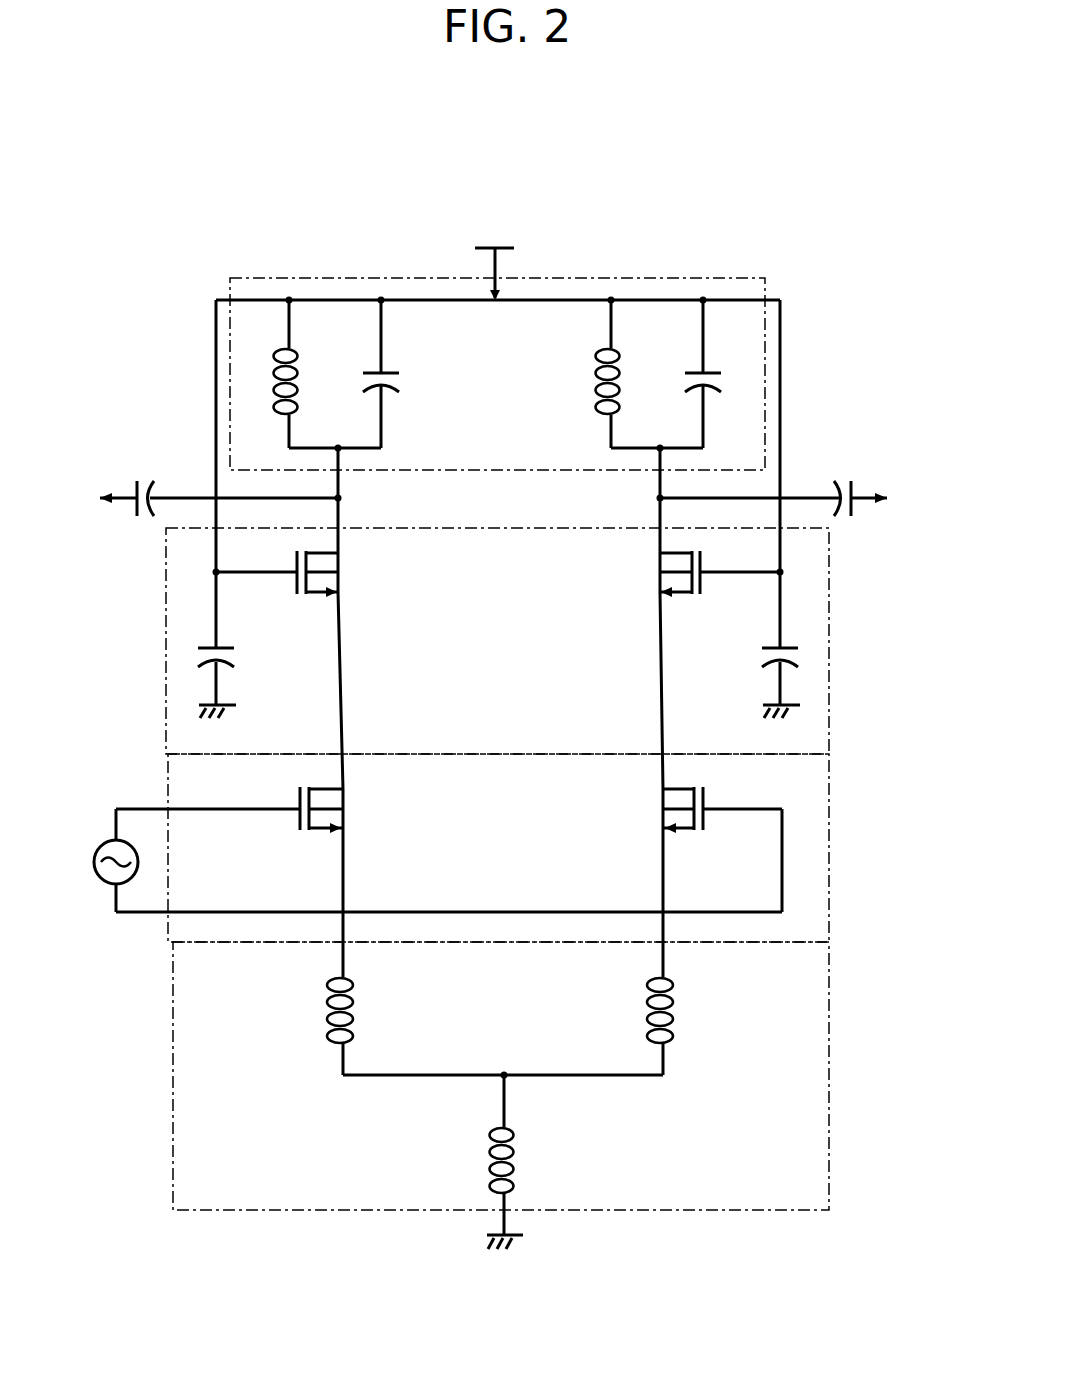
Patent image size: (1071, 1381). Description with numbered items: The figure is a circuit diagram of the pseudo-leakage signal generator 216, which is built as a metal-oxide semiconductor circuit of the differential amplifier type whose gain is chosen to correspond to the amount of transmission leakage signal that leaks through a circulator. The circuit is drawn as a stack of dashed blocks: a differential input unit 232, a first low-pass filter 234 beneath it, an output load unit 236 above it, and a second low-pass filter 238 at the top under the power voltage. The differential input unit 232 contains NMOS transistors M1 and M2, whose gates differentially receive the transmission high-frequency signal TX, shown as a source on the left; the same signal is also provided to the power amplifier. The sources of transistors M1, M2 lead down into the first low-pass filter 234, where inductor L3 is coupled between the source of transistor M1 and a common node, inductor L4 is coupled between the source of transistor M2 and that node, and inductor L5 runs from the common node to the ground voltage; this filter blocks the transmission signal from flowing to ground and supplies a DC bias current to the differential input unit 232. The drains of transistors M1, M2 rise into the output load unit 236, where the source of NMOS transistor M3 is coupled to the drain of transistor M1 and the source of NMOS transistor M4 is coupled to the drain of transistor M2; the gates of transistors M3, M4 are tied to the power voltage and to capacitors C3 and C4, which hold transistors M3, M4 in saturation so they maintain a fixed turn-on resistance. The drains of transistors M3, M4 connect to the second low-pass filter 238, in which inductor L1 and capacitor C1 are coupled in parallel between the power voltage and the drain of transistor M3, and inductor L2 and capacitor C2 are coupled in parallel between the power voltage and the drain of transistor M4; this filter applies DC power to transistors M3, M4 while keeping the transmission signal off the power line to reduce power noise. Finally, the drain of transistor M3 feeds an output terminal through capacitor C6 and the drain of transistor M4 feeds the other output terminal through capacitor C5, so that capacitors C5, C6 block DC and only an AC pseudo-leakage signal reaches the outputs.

The pseudo-leakage signal generator 216 is at (554, 174).
The second low-pass filter 238 is at (766, 376).
The output load unit 236 is at (830, 640).
The differential input unit 232 is at (830, 847).
The first low-pass filter 234 is at (834, 1076).
The inductor L1 is at (270, 381).
The inductor L2 is at (592, 381).
The inductor L3 is at (356, 1010).
The inductor L4 is at (678, 1010).
The inductor L5 is at (518, 1160).
The capacitor C1 is at (400, 382).
The capacitor C2 is at (722, 382).
The capacitor C3 is at (237, 681).
The capacitor C4 is at (767, 681).
The capacitor C5 is at (848, 485).
The capacitor C6 is at (148, 485).
The NMOS transistor M1 is at (251, 810).
The NMOS transistor M2 is at (704, 810).
The NMOS transistor M3 is at (299, 574).
The NMOS transistor M4 is at (703, 574).
The transmission high-frequency signal TX is at (422, 860).